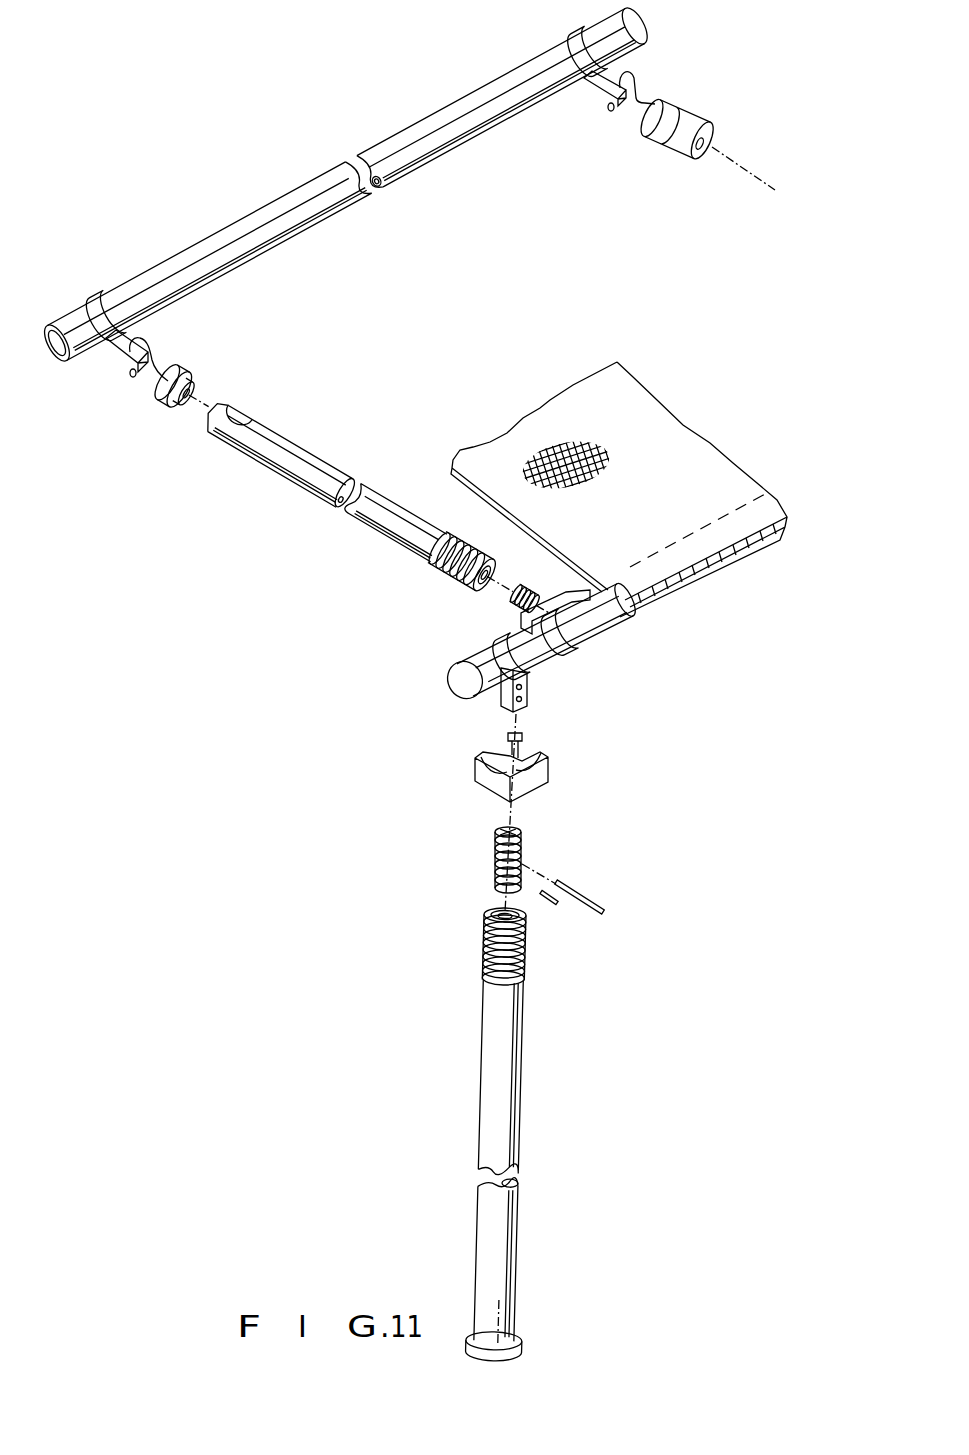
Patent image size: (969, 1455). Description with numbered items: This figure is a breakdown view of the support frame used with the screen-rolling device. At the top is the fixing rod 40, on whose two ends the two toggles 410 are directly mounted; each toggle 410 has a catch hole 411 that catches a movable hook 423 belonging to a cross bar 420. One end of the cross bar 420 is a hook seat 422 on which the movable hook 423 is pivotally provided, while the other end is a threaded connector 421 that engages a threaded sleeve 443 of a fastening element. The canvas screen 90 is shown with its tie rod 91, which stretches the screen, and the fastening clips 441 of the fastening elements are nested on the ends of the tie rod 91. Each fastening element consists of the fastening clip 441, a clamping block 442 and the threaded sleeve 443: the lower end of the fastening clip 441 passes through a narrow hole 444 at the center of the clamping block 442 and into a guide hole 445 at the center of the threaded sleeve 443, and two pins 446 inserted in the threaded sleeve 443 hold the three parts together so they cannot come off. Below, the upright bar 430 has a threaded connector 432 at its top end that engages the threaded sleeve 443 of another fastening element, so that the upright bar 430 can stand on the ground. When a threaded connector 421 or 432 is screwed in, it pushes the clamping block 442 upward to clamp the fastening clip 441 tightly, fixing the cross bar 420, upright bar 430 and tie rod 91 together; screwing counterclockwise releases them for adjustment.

The fixing rod 40 is at (283, 213).
The toggle 410 is at (583, 37).
The catch hole 411 is at (607, 93).
The movable hook 423 is at (637, 110).
The cross bar 420 is at (687, 120).
The hook seat 422 is at (193, 380).
The threaded connector 421 is at (440, 577).
The threaded sleeve 443 is at (523, 590).
The canvas screen 90 is at (713, 440).
The fastening clip 441 is at (510, 637).
The tie rod 91 is at (460, 677).
The clamping block 442 is at (473, 770).
The narrow hole 444 is at (522, 780).
The guide hole 445 is at (500, 830).
The pin 446 is at (553, 902).
The threaded connector 432 is at (483, 957).
The upright bar 430 is at (510, 1097).